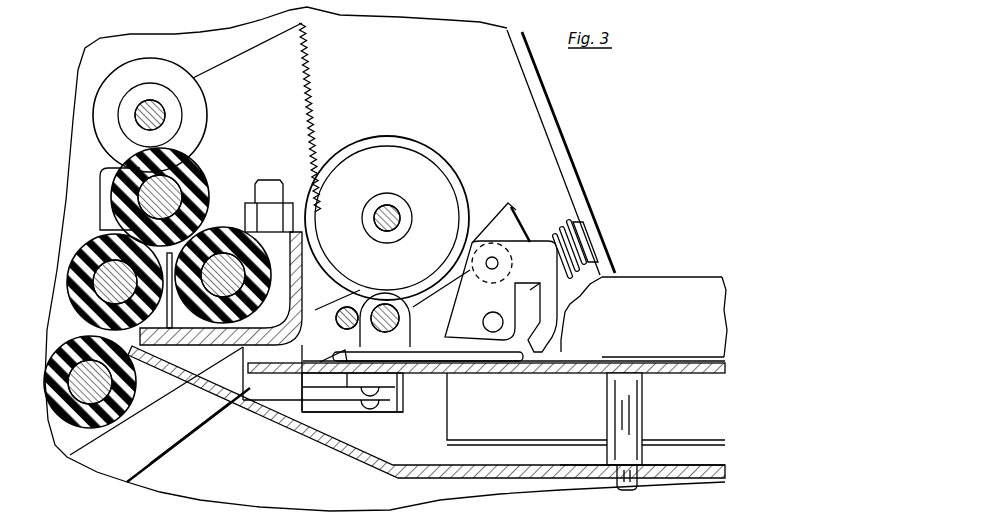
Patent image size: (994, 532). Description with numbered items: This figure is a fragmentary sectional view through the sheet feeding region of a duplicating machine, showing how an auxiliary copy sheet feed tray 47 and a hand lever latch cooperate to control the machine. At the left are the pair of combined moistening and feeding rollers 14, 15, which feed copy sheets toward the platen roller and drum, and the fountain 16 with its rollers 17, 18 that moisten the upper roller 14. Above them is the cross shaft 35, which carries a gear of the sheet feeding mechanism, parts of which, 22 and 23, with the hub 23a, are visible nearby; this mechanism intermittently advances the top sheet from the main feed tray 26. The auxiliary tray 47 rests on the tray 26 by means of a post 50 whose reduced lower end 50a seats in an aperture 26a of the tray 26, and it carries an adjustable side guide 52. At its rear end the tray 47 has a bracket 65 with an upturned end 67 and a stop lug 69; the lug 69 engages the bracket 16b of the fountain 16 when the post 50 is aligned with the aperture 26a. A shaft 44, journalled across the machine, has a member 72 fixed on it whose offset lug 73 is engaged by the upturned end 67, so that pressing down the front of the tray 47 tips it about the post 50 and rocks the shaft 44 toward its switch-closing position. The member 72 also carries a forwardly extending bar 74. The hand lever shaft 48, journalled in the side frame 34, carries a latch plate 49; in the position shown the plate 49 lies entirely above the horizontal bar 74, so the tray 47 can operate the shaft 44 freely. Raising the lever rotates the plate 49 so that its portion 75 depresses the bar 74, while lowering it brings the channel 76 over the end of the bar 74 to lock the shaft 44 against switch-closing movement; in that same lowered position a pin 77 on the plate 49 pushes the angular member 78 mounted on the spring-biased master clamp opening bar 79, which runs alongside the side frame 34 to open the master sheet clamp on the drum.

The upper combined moistening and feeding roller 14 is at (102, 246).
The lower combined moistening and feeding roller 15 is at (62, 346).
The fountain 16 is at (197, 346).
The bracket on fountain 16b is at (248, 390).
The moistening roller 17 is at (262, 292).
The moistening roller 18 is at (200, 172).
The copy sheet feeding mechanism part 22 is at (238, 66).
The copy sheet feeding mechanism part 23 is at (387, 218).
The drive wheel hub 23a is at (373, 232).
The feed tray 26 is at (358, 458).
The aperture in feed tray 26a is at (612, 477).
The side frame 34 is at (578, 168).
The cross shaft 35 is at (148, 102).
The shaft 44 is at (406, 312).
The auxiliary copy sheet feed tray 47 is at (673, 373).
The shaft of hand lever 48 is at (490, 314).
The latch plate 49 is at (539, 271).
The post 50 is at (612, 403).
The reduced lower end of post 50a is at (638, 482).
The adjustable side guide 52 is at (677, 283).
The bracket 65 is at (405, 386).
The stop lug 69 is at (393, 406).
The upturned end of bracket 67 is at (333, 362).
The member fixed on shaft 72 is at (396, 348).
The offset lug 73 is at (340, 312).
The forwardly extending bar 74 is at (487, 360).
The portion of latch plate 75 is at (452, 337).
The channel of latch plate 76 is at (533, 285).
The pin 77 is at (564, 232).
The angular member 78 is at (512, 222).
The master clamp opening bar 79 is at (180, 442).